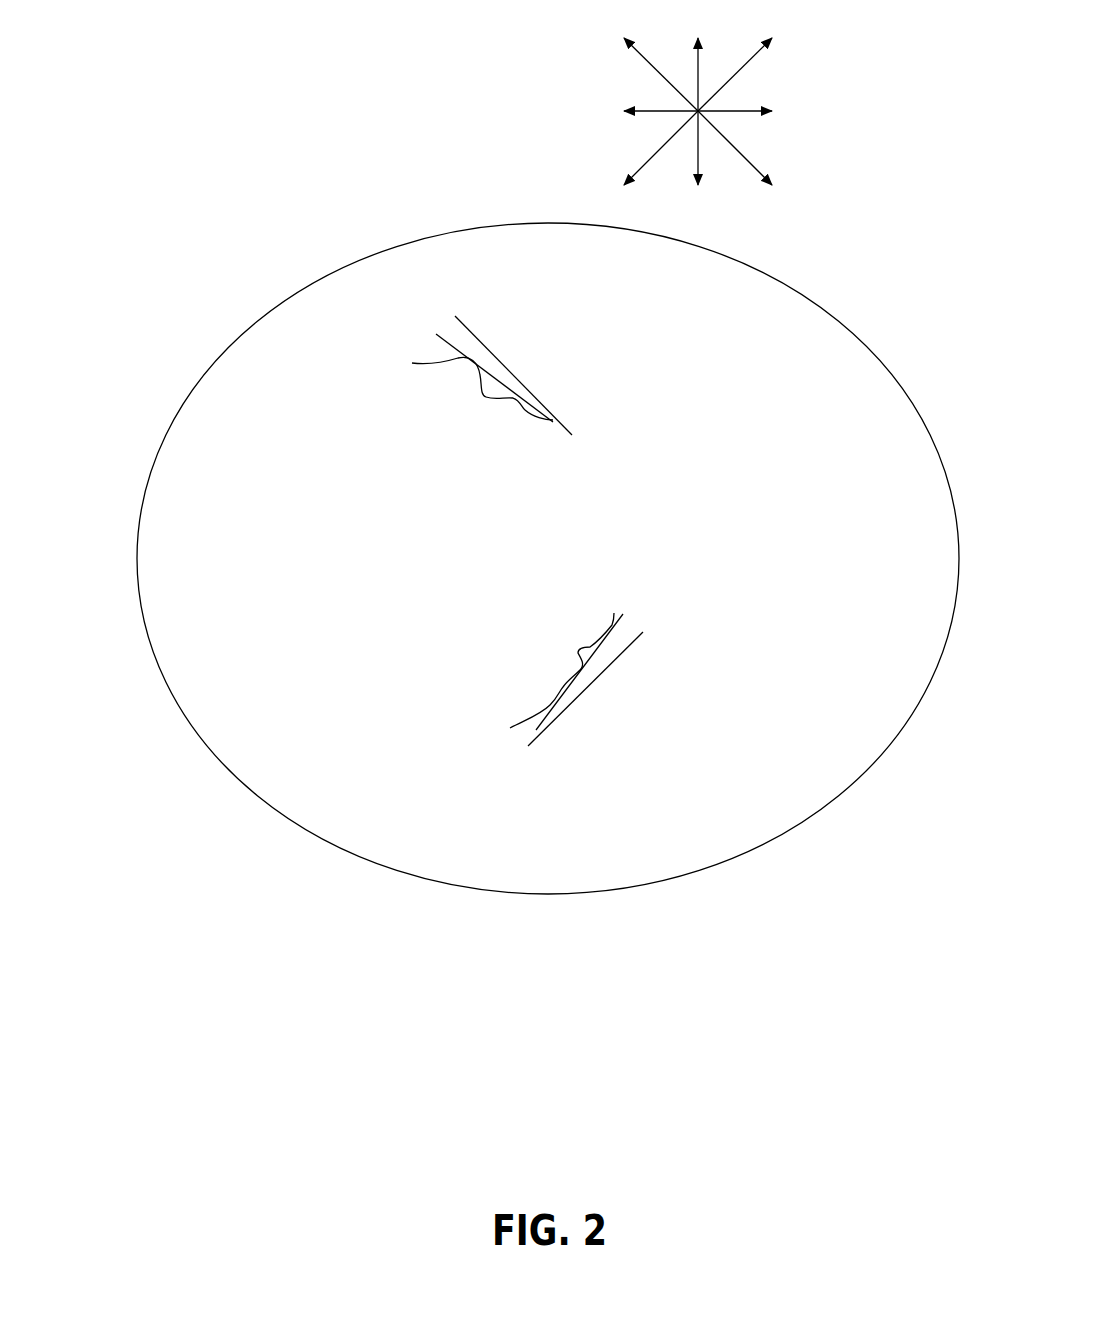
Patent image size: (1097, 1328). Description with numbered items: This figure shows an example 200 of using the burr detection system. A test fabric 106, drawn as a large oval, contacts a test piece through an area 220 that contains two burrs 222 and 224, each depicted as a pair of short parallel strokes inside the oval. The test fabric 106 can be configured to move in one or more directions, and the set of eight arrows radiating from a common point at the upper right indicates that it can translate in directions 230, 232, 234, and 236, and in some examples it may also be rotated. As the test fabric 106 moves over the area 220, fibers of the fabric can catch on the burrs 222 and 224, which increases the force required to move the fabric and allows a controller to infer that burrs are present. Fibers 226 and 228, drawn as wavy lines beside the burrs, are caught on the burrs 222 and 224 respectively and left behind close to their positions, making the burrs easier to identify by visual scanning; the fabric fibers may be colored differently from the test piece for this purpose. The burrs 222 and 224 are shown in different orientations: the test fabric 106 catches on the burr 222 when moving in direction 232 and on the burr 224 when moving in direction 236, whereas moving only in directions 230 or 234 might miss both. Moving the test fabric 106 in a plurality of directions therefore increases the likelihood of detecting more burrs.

The example 200 is at (175, 92).
The test fabric 106 is at (273, 307).
The area 220 is at (667, 528).
The burr 222 is at (520, 378).
The burr 224 is at (587, 695).
The fiber 226 is at (488, 397).
The fiber 228 is at (578, 652).
The direction 230 is at (699, 57).
The direction 232 is at (767, 57).
The direction 234 is at (767, 113).
The direction 236 is at (767, 166).